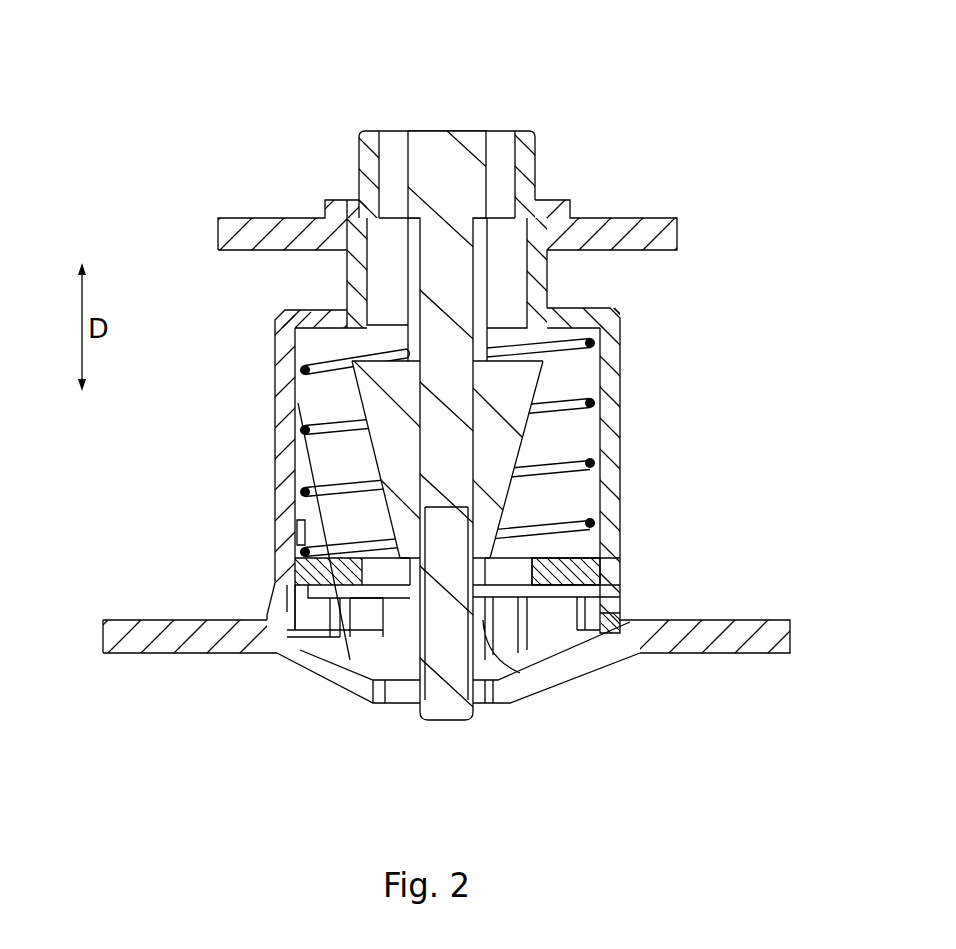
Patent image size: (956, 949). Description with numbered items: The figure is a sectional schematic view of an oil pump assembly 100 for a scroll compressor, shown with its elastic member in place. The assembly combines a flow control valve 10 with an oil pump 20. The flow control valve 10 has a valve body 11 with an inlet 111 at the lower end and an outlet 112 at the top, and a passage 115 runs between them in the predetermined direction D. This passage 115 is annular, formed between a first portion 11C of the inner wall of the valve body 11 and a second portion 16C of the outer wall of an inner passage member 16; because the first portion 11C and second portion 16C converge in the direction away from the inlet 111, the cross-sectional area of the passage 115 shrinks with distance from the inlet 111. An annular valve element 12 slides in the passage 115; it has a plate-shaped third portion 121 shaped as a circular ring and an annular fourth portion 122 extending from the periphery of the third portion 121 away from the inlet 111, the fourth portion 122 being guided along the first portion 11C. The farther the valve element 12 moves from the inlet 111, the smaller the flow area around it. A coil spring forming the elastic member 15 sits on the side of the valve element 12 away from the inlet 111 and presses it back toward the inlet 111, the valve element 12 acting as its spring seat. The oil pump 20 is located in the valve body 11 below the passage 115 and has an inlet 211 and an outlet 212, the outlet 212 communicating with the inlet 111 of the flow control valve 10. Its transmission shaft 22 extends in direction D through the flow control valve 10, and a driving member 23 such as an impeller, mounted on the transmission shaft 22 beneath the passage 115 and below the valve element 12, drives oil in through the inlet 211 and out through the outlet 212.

The oil pump assembly 100 is at (700, 88).
The outlet 112 is at (392, 128).
The flow control valve 10 is at (628, 365).
The valve body 11 is at (623, 425).
The passage 115 is at (308, 467).
The elastic member 15 is at (596, 336).
The inner passage member 16 is at (502, 438).
The second portion 16C is at (622, 463).
The valve element 12 is at (555, 555).
The fourth portion 122 is at (597, 543).
The third portion 121 is at (622, 568).
The driving member 23 is at (621, 593).
The oil pump 20 is at (558, 689).
The inlet 211 is at (400, 705).
The transmission shaft 22 is at (447, 658).
The first portion 11C is at (362, 673).
The inlet 111 is at (308, 647).
The outlet 212 is at (335, 611).